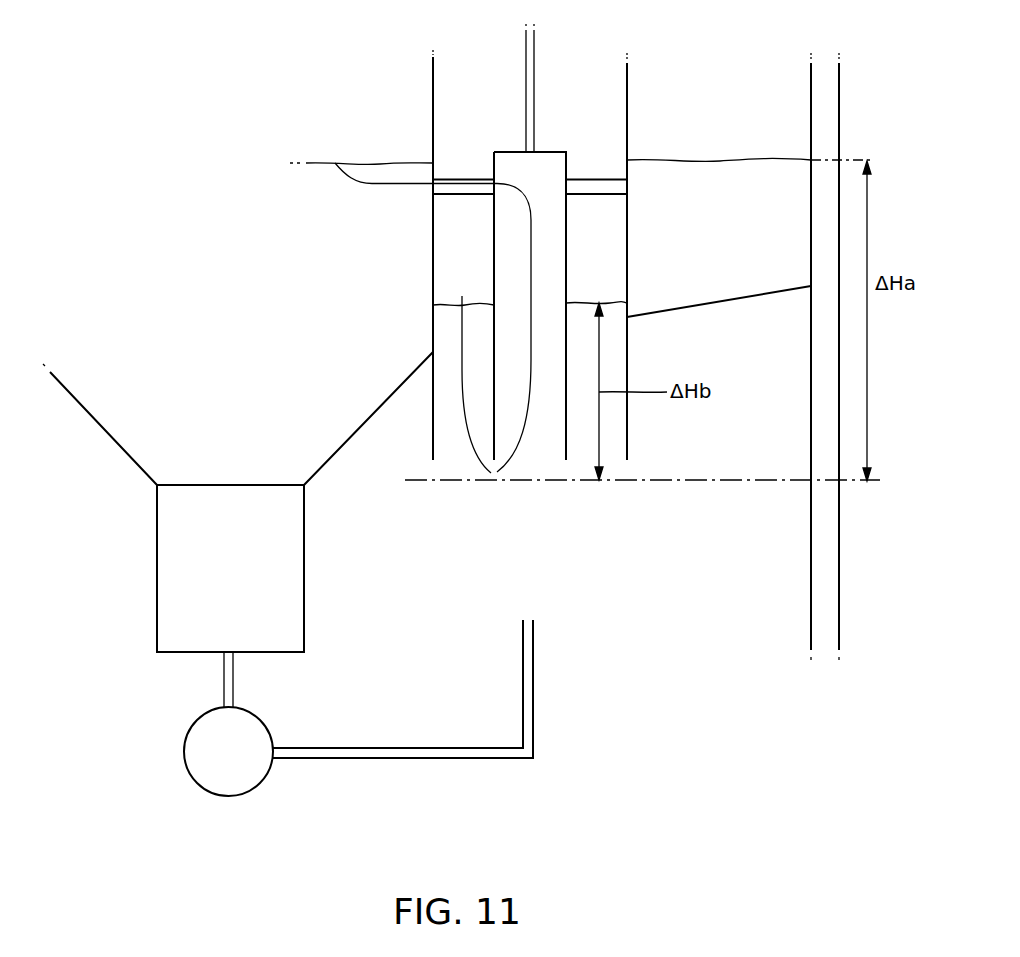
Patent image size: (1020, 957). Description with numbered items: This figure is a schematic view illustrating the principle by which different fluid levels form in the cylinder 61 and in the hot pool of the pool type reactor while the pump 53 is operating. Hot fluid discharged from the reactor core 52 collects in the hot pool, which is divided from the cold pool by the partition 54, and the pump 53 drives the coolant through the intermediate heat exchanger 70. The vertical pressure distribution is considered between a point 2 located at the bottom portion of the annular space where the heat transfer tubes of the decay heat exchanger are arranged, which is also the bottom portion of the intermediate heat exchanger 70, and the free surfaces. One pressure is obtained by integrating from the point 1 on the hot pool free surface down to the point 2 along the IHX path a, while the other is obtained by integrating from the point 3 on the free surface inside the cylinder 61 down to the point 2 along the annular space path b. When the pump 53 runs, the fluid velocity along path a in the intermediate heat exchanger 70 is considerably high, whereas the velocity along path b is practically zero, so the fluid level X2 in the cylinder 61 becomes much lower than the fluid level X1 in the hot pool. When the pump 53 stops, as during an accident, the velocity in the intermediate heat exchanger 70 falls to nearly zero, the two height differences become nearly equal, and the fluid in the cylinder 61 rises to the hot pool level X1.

The reactor core 52 is at (170, 562).
The pump 53 is at (207, 743).
The partition 54 is at (713, 303).
The cylinder 61 is at (433, 237).
The intermediate heat exchanger 70 is at (567, 234).
The fluid level in the hot pool X1 is at (740, 160).
The fluid level in the cylinder X2 is at (616, 300).
The point on the hot pool free surface 1 is at (410, 172).
The point at the bottom portion 2 is at (494, 480).
The point on the cylinder free surface 3 is at (462, 283).
The IHX path a is at (520, 346).
The annular space path b is at (471, 384).